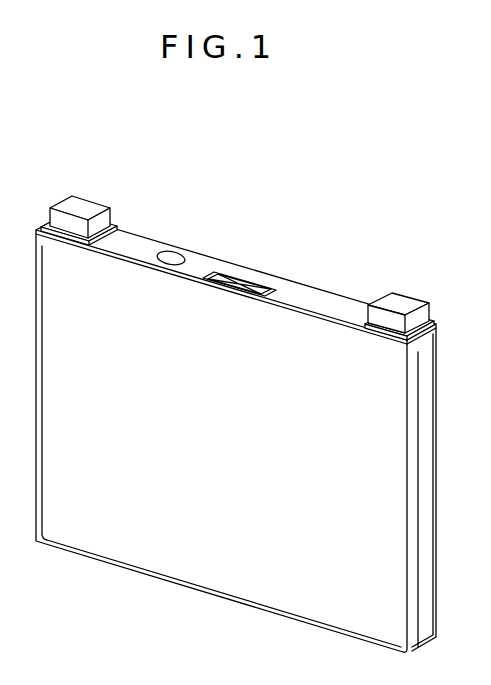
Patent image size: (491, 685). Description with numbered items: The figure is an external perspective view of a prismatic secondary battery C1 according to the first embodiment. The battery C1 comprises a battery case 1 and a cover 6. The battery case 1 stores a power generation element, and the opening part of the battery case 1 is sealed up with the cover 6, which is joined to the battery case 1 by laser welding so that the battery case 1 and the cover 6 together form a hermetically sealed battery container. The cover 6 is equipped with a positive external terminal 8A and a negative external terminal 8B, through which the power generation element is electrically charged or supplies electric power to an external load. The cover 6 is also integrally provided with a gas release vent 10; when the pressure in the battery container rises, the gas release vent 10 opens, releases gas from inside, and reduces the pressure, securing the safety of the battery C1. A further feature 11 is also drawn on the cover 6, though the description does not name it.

The battery case 1 is at (196, 571).
The cover 6 is at (307, 296).
The positive external terminal 8A is at (417, 306).
The negative external terminal 8B is at (83, 200).
The gas release vent 10 is at (218, 270).
The electrolyte injection hole 11 is at (172, 252).
The prismatic secondary battery C1 is at (361, 186).